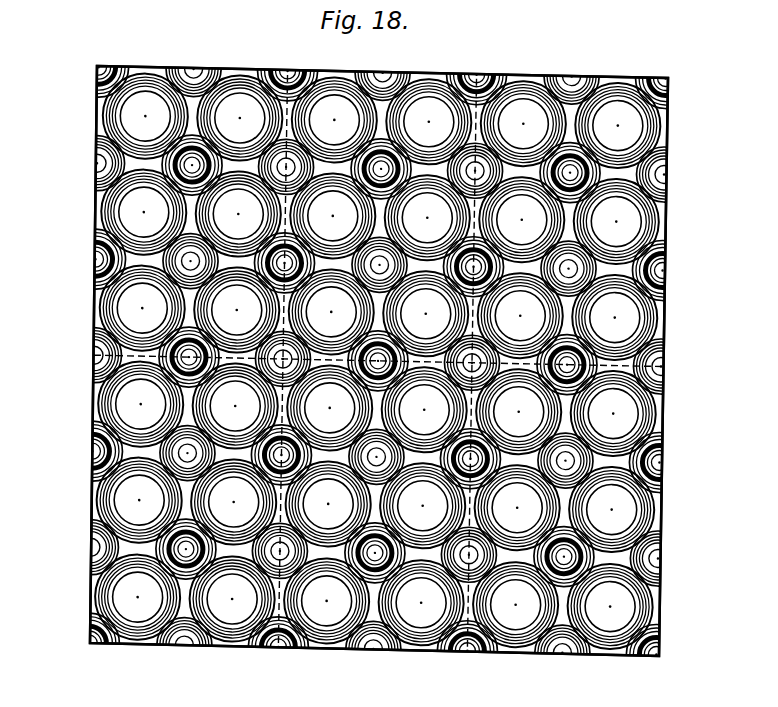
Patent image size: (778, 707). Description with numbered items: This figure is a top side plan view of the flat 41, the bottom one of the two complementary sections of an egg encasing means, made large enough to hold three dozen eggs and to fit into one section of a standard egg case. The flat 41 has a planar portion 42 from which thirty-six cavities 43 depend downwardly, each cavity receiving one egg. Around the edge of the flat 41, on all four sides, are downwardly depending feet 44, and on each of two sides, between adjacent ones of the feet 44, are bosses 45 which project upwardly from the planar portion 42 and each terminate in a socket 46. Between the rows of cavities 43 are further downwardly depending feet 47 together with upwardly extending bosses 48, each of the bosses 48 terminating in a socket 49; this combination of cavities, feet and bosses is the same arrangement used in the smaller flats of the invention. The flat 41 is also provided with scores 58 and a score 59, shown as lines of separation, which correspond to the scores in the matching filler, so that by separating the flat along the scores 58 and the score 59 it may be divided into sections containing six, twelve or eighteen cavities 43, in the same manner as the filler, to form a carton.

The flat 41 is at (666, 115).
The planar portion 42 is at (186, 52).
The cavities 43 is at (377, 361).
The feet 44 is at (377, 369).
The bosses 45 is at (376, 361).
The socket 46 is at (372, 361).
The feet 47 is at (377, 361).
The bosses 48 is at (377, 361).
The socket 49 is at (377, 361).
The scores 58 is at (275, 72).
The score 59 is at (88, 362).